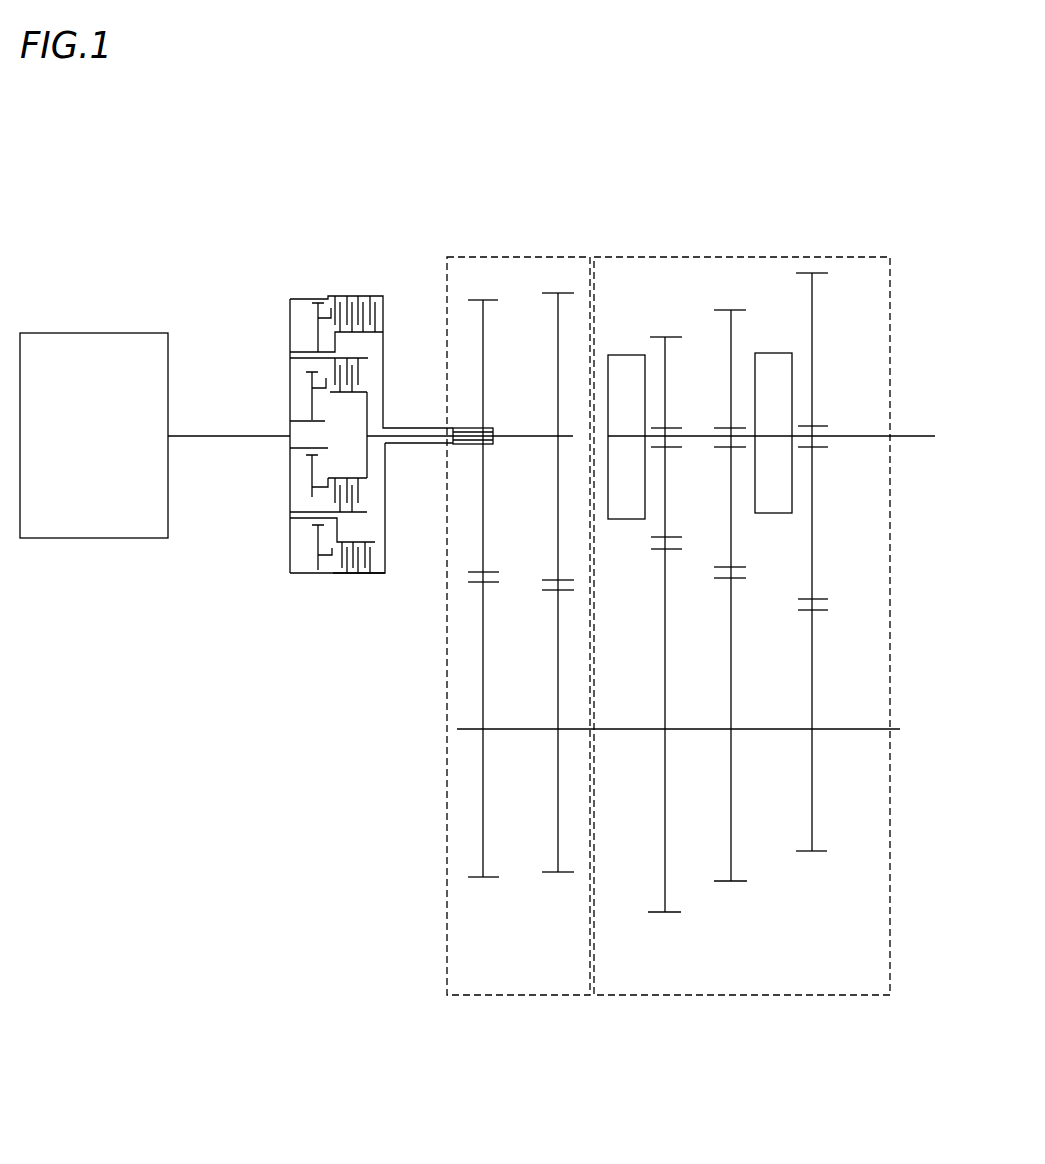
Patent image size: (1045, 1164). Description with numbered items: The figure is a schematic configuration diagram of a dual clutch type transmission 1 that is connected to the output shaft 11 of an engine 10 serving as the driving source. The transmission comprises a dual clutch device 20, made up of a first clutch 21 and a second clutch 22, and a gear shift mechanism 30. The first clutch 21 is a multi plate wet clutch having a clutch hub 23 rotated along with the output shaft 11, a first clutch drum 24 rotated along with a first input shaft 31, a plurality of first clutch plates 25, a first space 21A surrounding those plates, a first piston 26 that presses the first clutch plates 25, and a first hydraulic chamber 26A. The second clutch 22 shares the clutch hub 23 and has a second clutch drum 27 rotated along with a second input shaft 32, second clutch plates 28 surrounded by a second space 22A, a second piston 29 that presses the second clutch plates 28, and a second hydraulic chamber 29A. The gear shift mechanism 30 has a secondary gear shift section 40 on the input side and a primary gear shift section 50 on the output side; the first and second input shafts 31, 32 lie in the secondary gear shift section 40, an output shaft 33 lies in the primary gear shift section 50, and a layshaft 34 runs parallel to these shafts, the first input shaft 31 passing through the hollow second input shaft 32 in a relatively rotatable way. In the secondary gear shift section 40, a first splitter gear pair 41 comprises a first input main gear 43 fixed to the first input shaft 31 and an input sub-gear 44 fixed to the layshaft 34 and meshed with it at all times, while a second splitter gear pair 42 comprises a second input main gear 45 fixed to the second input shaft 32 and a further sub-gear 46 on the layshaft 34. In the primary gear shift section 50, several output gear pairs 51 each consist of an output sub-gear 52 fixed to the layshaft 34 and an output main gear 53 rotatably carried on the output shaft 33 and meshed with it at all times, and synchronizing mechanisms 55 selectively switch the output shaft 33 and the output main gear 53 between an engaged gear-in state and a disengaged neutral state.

The dual clutch type transmission 1 is at (578, 170).
The engine 10 is at (111, 442).
The output shaft 11 is at (208, 440).
The dual clutch device 20 is at (338, 280).
The first clutch 21 is at (282, 373).
The first space 21A is at (367, 385).
The second clutch 22 is at (287, 310).
The second space 22A is at (383, 310).
The clutch hub 23 is at (290, 528).
The first clutch drum 24 is at (367, 420).
The first clutch plates 25 is at (343, 478).
The first piston 26 is at (290, 465).
The first hydraulic chamber 26A is at (290, 484).
The second clutch drum 27 is at (388, 470).
The second clutch plates 28 is at (376, 557).
The second piston 29 is at (310, 572).
The second hydraulic chamber 29A is at (300, 548).
The gear shift mechanism 30 is at (665, 245).
The first input shaft 31 is at (530, 436).
The second input shaft 32 is at (466, 427).
The output shaft 33 is at (856, 436).
The layshaft 34 is at (611, 730).
The secondary gear shift section 40 is at (503, 256).
The first splitter gear pair 41 is at (560, 900).
The second splitter gear pair 42 is at (486, 893).
The first input main gear 43 is at (556, 494).
The input sub-gear 44 is at (556, 631).
The second input main gear 45 is at (485, 538).
The gear 46 is at (485, 695).
The primary gear shift section 50 is at (785, 256).
The output gear pairs 51 is at (667, 922).
The output sub-gear 52 is at (667, 636).
The output main gear 53 is at (730, 388).
The synchronizing mechanisms 55 is at (623, 355).